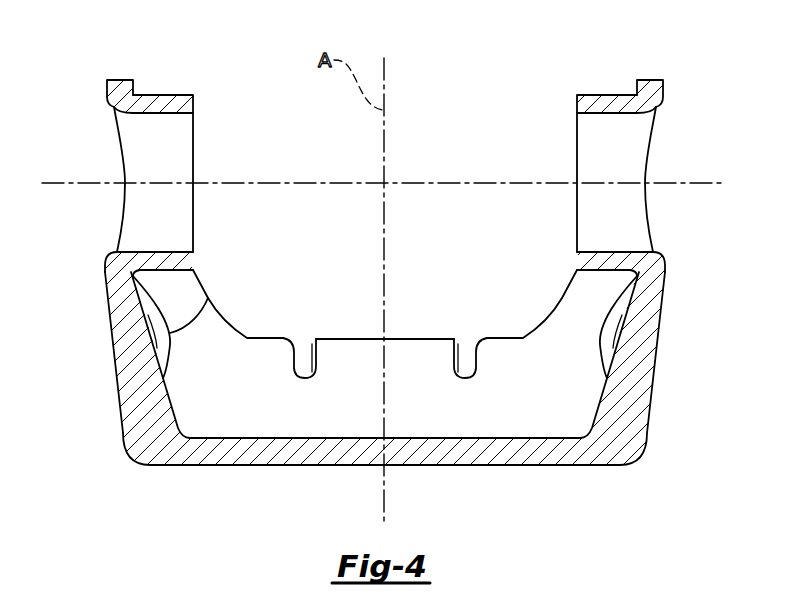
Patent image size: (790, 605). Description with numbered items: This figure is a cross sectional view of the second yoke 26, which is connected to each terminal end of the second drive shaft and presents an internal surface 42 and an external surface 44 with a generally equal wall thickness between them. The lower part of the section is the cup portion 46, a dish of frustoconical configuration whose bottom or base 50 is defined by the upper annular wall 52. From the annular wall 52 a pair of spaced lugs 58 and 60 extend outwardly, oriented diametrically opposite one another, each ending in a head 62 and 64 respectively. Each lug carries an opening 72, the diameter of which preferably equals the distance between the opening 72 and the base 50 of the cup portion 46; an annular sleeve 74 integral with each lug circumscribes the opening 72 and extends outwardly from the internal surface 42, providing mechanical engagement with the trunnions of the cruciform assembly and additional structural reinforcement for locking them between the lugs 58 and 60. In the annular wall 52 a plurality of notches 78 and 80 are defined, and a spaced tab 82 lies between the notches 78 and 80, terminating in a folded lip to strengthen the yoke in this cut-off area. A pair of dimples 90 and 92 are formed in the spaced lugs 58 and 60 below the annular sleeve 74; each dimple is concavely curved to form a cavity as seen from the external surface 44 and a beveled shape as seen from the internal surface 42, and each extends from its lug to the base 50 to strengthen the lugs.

The second yoke 26 is at (252, 134).
The internal surface 42 is at (171, 403).
The external surface 44 is at (117, 371).
The cup portion 46 is at (654, 403).
The base 50 is at (288, 466).
The annular wall 52 is at (118, 402).
The spaced lug 58 is at (122, 268).
The spaced lug 60 is at (665, 270).
The head 62 is at (122, 79).
The head 64 is at (650, 79).
The opening 72 is at (126, 213).
The annular sleeve 74 is at (160, 100).
The notch 78 is at (305, 367).
The notch 80 is at (462, 370).
The spaced tab 82 is at (358, 358).
The dimple 90 is at (208, 298).
The dimple 92 is at (600, 347).